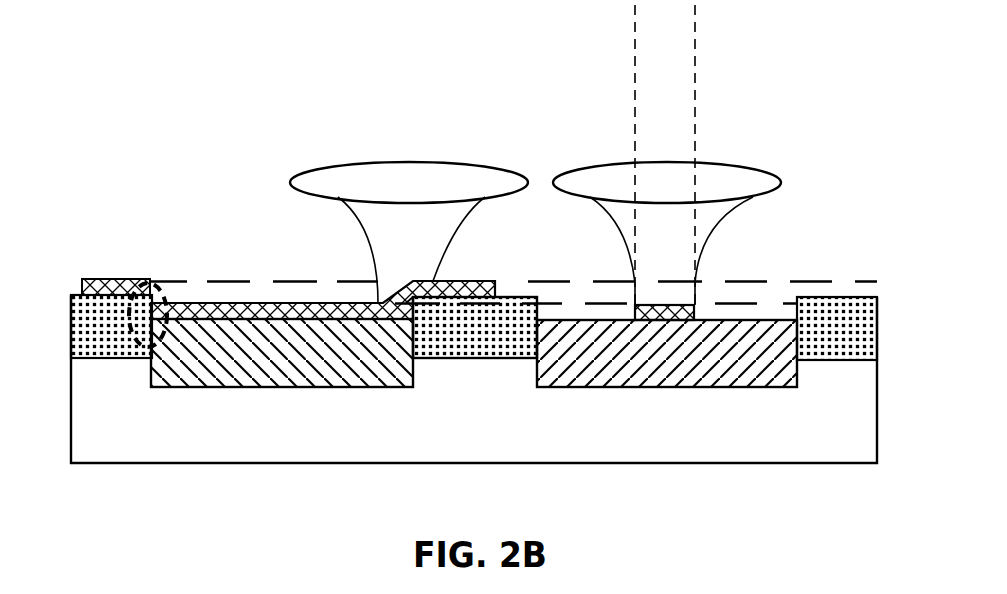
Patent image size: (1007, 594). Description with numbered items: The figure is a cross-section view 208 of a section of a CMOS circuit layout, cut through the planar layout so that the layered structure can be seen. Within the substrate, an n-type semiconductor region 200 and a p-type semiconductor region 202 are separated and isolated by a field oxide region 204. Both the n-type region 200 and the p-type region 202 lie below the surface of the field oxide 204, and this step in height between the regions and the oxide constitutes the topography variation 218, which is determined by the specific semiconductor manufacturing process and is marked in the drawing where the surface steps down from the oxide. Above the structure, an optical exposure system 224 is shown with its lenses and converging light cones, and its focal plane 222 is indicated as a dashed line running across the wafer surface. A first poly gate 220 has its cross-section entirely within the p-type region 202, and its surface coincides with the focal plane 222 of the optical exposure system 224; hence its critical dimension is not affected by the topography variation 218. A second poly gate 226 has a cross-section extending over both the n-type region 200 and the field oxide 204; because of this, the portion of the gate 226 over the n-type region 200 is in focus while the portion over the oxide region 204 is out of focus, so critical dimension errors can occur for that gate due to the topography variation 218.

The n-type semiconductor region 200 is at (390, 388).
The p-type semiconductor region 202 is at (782, 388).
The field oxide region 204 is at (482, 359).
The cross-section view 208 is at (395, 463).
The topography variation 218 is at (130, 313).
The poly gate 220 is at (694, 308).
The focal plane 222 is at (243, 303).
The optical exposure system 224 is at (620, 162).
The poly gate 226 is at (450, 279).